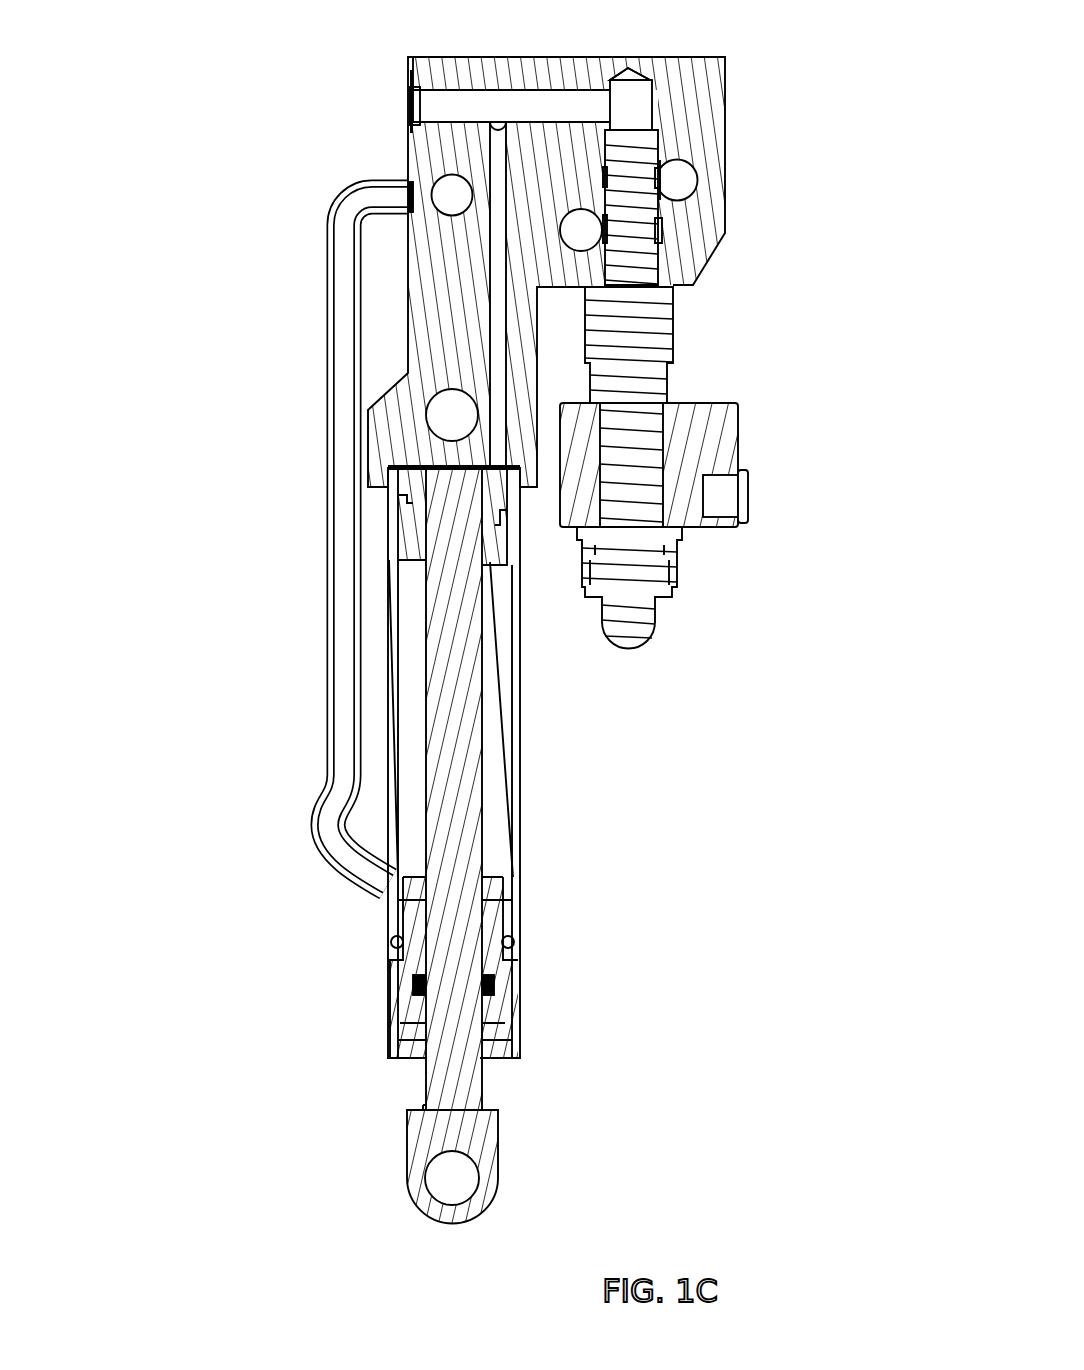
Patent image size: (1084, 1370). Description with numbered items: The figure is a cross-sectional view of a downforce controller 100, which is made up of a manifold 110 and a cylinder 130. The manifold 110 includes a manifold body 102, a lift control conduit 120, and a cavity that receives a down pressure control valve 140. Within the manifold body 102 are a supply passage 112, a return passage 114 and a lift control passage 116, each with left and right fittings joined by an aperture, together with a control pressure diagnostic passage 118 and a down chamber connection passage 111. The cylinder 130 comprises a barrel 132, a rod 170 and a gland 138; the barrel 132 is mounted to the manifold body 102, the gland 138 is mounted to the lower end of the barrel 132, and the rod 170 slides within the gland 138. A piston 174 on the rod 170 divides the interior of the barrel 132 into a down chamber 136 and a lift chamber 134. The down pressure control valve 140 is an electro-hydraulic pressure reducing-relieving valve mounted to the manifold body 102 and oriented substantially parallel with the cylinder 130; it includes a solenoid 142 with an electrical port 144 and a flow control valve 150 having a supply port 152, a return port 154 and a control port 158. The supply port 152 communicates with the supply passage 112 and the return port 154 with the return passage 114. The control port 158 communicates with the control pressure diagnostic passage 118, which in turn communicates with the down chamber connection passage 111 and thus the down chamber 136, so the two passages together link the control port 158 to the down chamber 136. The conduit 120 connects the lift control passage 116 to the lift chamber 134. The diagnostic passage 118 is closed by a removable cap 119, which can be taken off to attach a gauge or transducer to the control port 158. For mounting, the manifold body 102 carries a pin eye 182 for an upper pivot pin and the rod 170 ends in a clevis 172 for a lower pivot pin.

The downforce controller 100 is at (90, 105).
The manifold body 102 is at (728, 56).
The manifold 110 is at (243, 172).
The down chamber connection passage 111 is at (500, 152).
The supply passage 112 is at (662, 177).
The return passage 114 is at (582, 240).
The lift control passage 116 is at (450, 212).
The control pressure diagnostic passage 118 is at (462, 125).
The cap 119 is at (410, 108).
The lift control conduit 120 is at (327, 330).
The cylinder 130 is at (620, 955).
The barrel 132 is at (522, 927).
The lift chamber 134 is at (497, 843).
The down chamber 136 is at (408, 494).
The gland 138 is at (390, 985).
The down pressure control valve 140 is at (714, 615).
The solenoid 142 is at (738, 412).
The electrical port 144 is at (750, 495).
The flow control valve 150 is at (675, 330).
The supply port 152 is at (665, 178).
The return port 154 is at (660, 225).
The control port 158 is at (640, 135).
The rod 170 is at (423, 1078).
The clevis 172 is at (430, 1168).
The piston 174 is at (490, 565).
The pin eye 182 is at (480, 434).